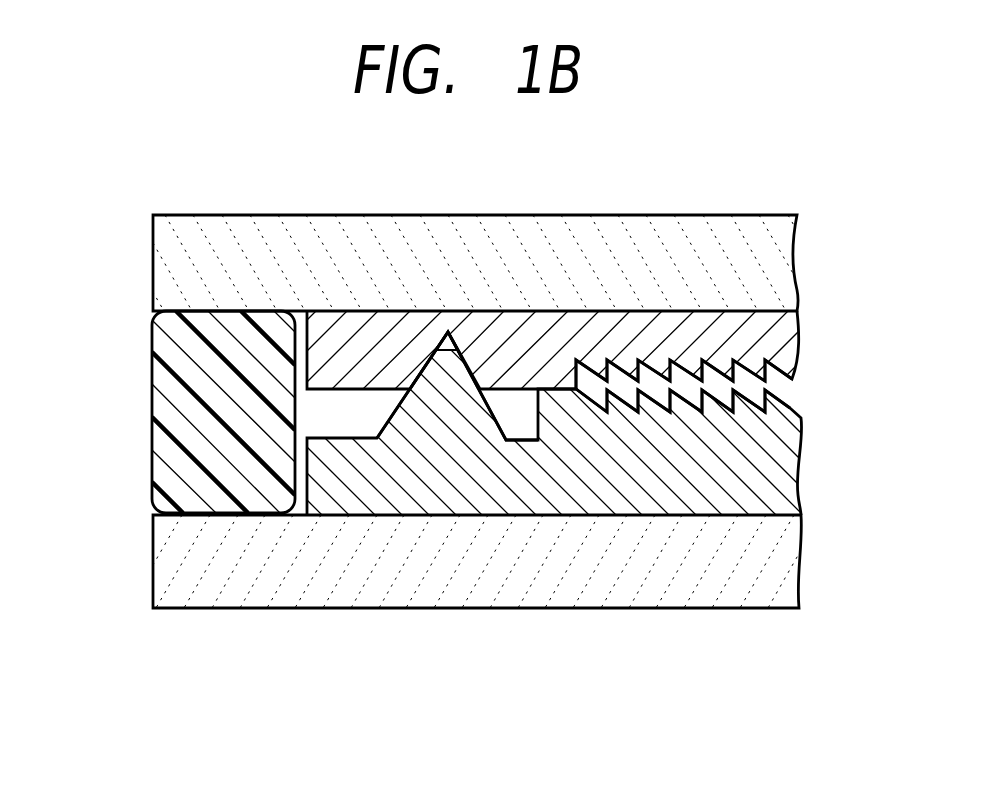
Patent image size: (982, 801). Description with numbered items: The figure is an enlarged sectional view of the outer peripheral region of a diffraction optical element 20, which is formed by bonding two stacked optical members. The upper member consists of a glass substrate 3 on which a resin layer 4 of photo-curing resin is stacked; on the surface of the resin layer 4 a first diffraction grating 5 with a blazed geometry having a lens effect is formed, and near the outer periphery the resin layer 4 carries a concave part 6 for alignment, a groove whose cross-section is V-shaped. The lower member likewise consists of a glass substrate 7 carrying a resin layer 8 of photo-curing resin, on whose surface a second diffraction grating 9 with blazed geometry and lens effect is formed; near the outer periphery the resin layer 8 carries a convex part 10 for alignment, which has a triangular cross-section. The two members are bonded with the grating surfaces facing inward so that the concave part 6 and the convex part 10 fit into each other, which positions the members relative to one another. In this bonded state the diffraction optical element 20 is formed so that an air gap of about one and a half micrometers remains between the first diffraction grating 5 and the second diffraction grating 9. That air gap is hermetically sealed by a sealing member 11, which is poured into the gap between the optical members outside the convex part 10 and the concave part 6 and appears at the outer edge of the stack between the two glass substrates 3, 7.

The diffraction optical element 20 is at (706, 206).
The glass substrate 3 is at (778, 237).
The resin layer 4 is at (782, 335).
The first diffraction grating 5 is at (780, 377).
The concave part 6 is at (448, 332).
The glass substrate 7 is at (770, 585).
The resin layer 8 is at (782, 497).
The second diffraction grating 9 is at (795, 410).
The convex part 10 is at (440, 400).
The sealing member 11 is at (177, 413).